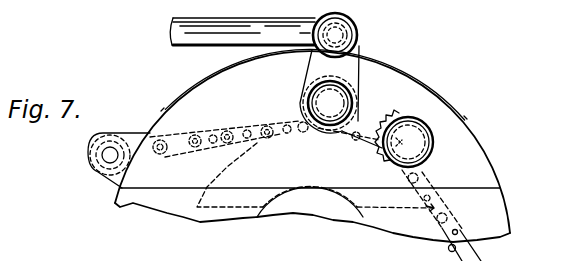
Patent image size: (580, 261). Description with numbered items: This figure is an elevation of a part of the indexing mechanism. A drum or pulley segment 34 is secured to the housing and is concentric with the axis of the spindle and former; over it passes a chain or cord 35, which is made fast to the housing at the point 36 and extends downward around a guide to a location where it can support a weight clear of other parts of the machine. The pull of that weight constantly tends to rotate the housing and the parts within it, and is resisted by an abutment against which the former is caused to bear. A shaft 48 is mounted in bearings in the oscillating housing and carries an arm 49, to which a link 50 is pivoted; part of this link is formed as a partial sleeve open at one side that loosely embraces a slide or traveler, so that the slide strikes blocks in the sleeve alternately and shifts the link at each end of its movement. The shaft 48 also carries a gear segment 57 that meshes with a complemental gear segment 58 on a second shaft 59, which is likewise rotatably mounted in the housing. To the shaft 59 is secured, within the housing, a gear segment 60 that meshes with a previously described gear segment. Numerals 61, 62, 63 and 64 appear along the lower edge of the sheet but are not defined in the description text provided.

The drum or pulley segment 34 is at (216, 173).
The chain or cord 35 is at (479, 258).
The point 36 is at (111, 153).
The shaft 48 is at (346, 91).
The arm 49 is at (313, 70).
The link 50 is at (206, 19).
The gear segment 57 is at (372, 106).
The complemental gear segment 58 is at (400, 112).
The shaft 59 is at (428, 147).
The gear segment 60 is at (233, 257).
The element 61 is at (292, 252).
The element 62 is at (338, 251).
The element 63 is at (263, 252).
The element 64 is at (367, 253).